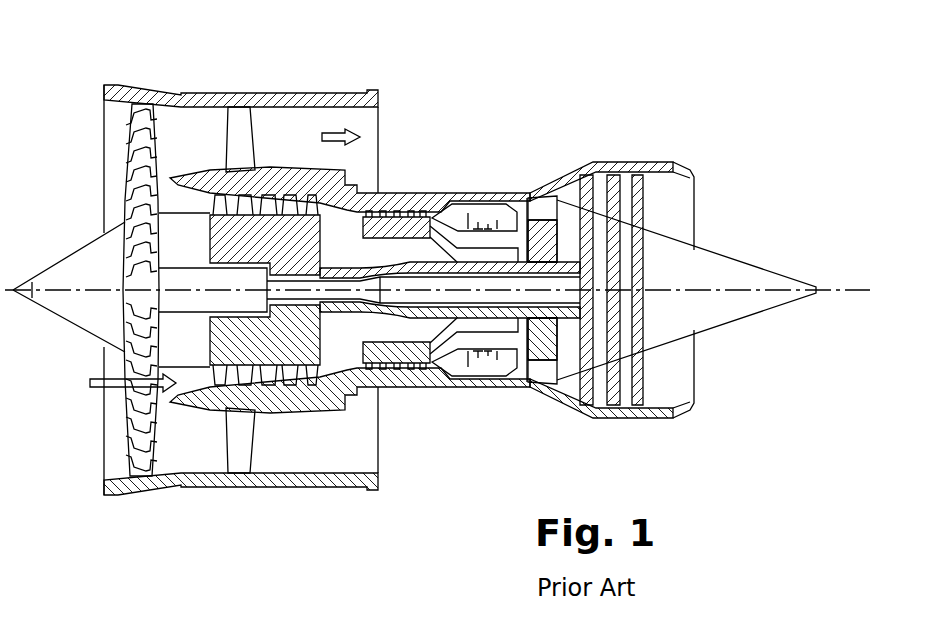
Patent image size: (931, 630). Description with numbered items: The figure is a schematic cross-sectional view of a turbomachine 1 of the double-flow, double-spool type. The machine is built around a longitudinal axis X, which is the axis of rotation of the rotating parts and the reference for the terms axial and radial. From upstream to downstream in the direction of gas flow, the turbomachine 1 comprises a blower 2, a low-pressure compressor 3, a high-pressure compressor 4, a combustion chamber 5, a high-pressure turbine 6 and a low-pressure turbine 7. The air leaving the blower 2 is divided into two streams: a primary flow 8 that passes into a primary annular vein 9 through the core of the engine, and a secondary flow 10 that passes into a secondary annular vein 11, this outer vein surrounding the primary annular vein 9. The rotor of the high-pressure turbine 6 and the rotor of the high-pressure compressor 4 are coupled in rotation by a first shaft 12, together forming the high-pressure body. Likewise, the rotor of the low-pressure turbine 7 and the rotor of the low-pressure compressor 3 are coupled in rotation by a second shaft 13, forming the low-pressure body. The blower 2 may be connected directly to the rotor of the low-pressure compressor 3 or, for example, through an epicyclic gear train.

The turbomachine 1 is at (522, 70).
The blower 2 is at (127, 176).
The low-pressure compressor 3 is at (280, 196).
The high-pressure compressor 4 is at (402, 230).
The combustion chamber 5 is at (487, 212).
The high-pressure turbine 6 is at (520, 222).
The low-pressure turbine 7 is at (612, 182).
The primary flow 8 is at (90, 381).
The primary annular vein 9 is at (375, 384).
The secondary flow 10 is at (330, 132).
The secondary annular vein 11 is at (280, 122).
The first shaft 12 is at (485, 326).
The second shaft 13 is at (538, 313).
The longitudinal axis X is at (838, 289).